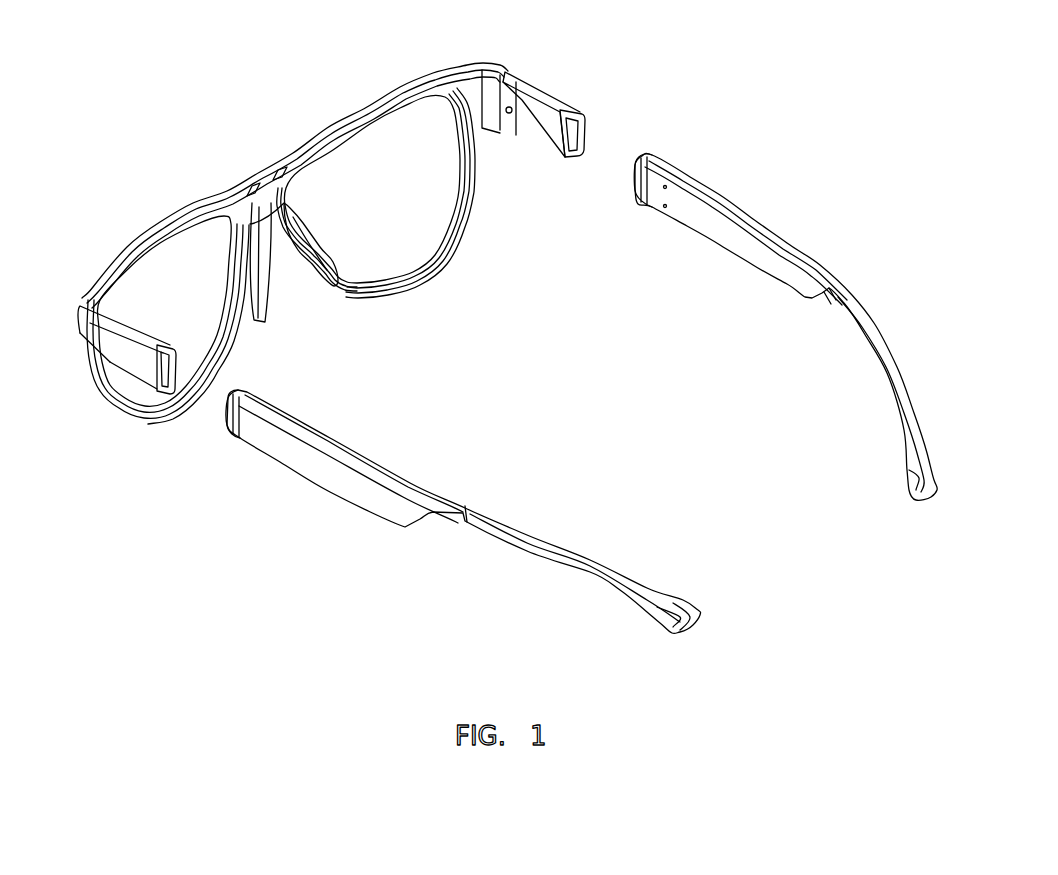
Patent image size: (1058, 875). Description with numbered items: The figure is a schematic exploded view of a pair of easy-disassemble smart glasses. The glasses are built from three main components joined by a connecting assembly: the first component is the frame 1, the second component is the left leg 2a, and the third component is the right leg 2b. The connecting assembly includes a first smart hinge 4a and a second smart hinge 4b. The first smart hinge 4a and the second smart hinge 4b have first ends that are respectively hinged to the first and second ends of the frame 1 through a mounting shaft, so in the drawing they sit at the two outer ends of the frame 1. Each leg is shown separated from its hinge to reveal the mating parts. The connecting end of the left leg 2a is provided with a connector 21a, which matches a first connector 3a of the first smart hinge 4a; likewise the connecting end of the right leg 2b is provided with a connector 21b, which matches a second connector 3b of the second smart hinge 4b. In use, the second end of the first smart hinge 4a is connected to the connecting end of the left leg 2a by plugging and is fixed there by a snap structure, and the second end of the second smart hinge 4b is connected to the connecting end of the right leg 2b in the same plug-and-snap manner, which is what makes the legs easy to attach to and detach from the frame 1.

The frame 1 is at (298, 158).
The left leg 2a is at (333, 483).
The right leg 2b is at (700, 213).
The connector 21a is at (227, 427).
The connector 21b is at (635, 182).
The first connector 3a is at (136, 371).
The second connector 3b is at (583, 130).
The first smart hinge 4a is at (120, 372).
The second smart hinge 4b is at (563, 102).